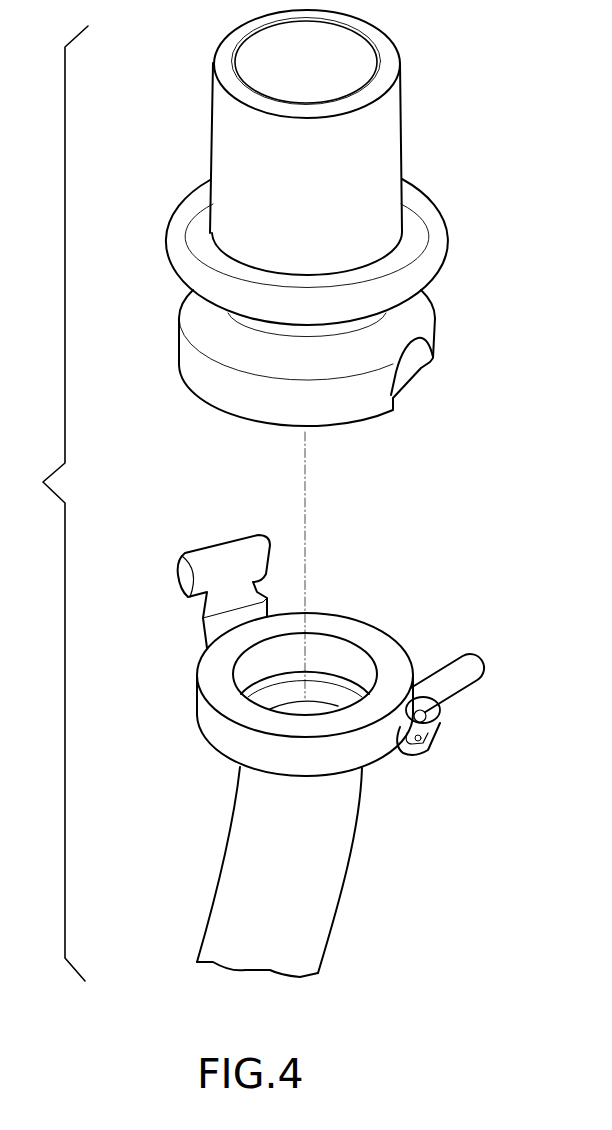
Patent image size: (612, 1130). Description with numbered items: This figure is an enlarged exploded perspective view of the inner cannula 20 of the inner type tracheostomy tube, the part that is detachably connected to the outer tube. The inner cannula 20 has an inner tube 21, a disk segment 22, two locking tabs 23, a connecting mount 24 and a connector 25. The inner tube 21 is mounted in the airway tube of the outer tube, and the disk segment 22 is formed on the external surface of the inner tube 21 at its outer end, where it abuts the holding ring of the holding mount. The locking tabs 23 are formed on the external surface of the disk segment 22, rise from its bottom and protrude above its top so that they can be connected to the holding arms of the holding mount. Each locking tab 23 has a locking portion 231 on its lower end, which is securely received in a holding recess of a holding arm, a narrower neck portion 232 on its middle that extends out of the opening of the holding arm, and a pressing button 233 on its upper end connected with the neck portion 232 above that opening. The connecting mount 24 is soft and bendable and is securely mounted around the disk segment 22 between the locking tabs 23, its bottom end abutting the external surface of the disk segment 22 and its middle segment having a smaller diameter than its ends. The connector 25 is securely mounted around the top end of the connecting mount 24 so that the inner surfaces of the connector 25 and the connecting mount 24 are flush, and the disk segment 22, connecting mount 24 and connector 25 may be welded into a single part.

The inner cannula 20 is at (428, 903).
The inner tube 21 is at (252, 837).
The disk segment 22 is at (373, 635).
The locking tab 23 is at (471, 751).
The locking portion 231 is at (423, 743).
The neck portion 232 is at (430, 717).
The pressing button 233 is at (465, 688).
The connecting mount 24 is at (210, 383).
The connector 25 is at (388, 133).